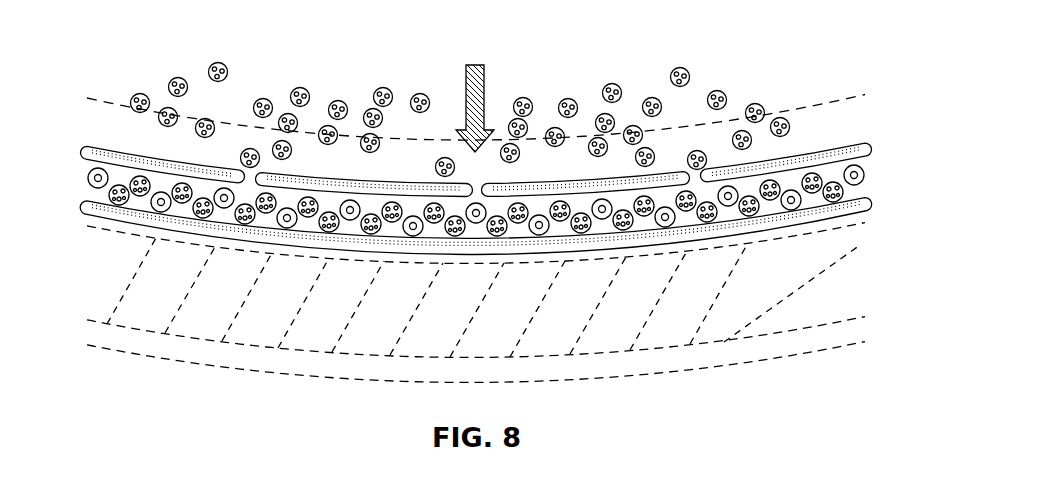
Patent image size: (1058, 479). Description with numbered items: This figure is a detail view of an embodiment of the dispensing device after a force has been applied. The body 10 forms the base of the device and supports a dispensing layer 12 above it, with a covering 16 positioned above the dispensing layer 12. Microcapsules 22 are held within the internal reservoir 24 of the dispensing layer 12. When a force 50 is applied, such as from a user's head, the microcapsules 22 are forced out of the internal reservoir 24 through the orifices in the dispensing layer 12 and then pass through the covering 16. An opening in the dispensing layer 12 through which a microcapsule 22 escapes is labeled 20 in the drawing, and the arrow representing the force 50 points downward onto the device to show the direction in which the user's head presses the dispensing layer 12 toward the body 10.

The body 10 is at (862, 270).
The dispensing layer 12 is at (872, 143).
The covering 16 is at (833, 107).
The particle passing through membrane opening 20 is at (708, 170).
The microcapsules 22 is at (680, 67).
The internal reservoir 24 is at (90, 187).
The force 50 is at (477, 65).